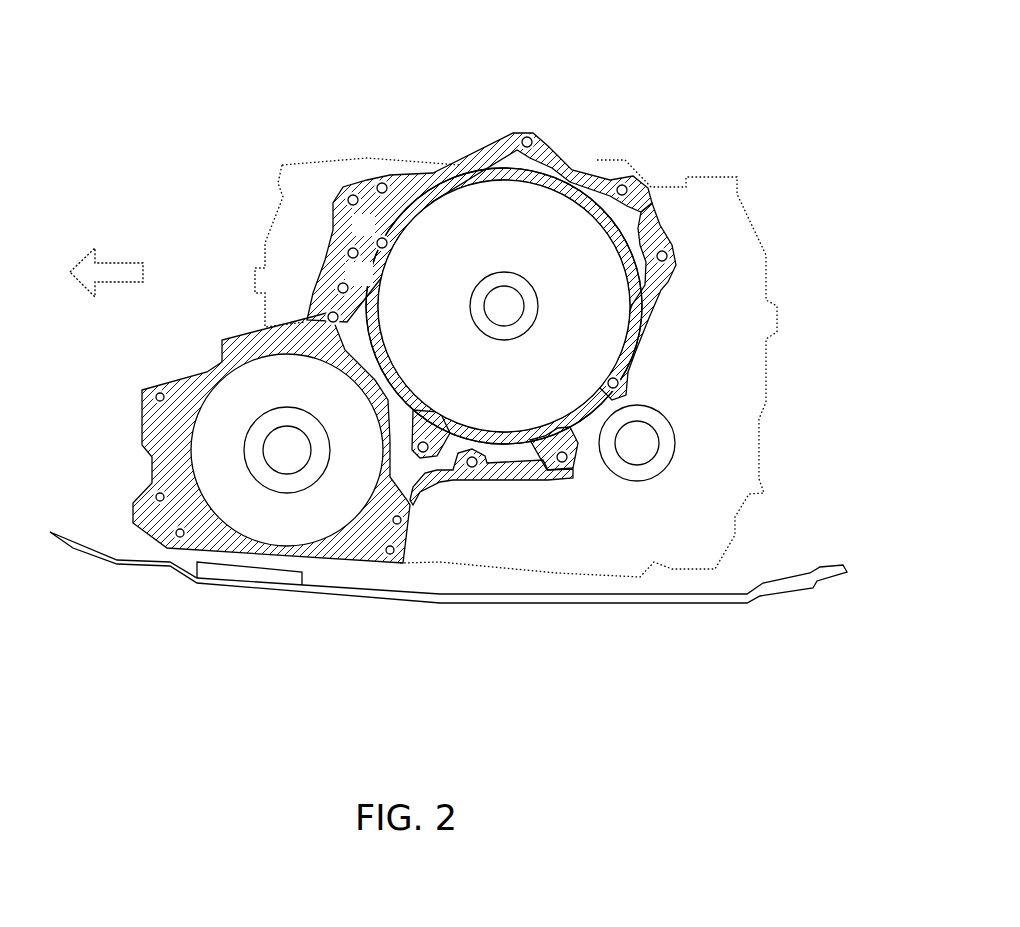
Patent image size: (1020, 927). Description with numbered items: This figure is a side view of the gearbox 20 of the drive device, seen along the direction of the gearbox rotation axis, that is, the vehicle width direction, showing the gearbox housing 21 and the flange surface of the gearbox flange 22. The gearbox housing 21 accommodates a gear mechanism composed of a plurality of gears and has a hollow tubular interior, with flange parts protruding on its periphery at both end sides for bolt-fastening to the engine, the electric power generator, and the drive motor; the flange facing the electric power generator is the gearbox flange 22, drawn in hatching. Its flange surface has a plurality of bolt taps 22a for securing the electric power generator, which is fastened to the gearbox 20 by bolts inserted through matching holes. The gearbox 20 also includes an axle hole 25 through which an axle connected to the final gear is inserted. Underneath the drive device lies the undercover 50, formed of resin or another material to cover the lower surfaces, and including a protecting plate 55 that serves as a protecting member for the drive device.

The gearbox 20 is at (607, 158).
The gearbox housing 21 is at (293, 230).
The gearbox flange 22 is at (358, 533).
The bolt tap 22a is at (178, 537).
The axle hole 25 is at (647, 465).
The undercover 50 is at (622, 602).
The protecting plate 55 is at (253, 583).